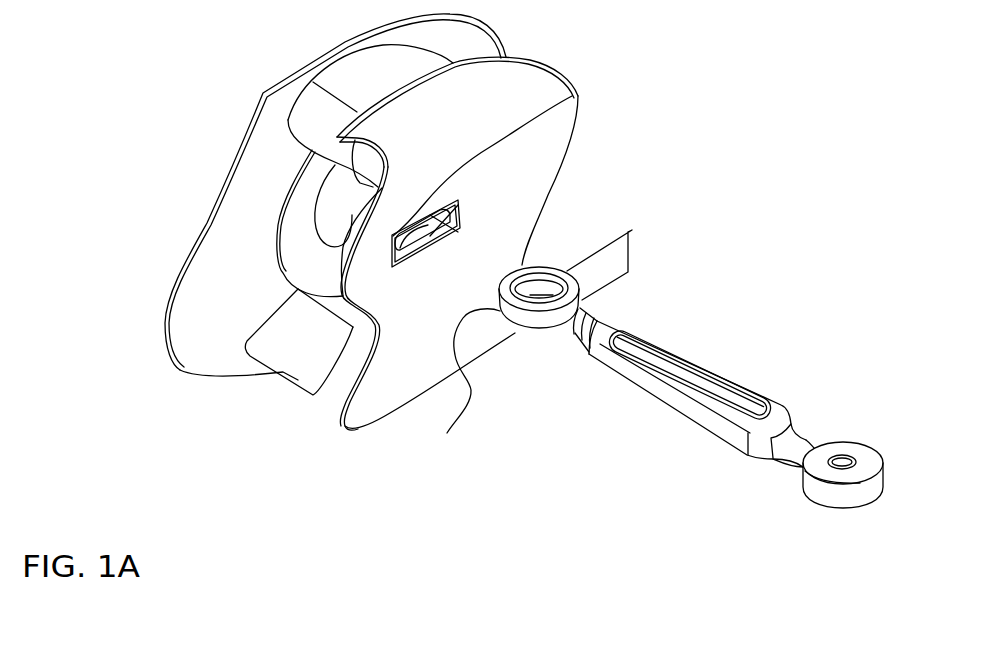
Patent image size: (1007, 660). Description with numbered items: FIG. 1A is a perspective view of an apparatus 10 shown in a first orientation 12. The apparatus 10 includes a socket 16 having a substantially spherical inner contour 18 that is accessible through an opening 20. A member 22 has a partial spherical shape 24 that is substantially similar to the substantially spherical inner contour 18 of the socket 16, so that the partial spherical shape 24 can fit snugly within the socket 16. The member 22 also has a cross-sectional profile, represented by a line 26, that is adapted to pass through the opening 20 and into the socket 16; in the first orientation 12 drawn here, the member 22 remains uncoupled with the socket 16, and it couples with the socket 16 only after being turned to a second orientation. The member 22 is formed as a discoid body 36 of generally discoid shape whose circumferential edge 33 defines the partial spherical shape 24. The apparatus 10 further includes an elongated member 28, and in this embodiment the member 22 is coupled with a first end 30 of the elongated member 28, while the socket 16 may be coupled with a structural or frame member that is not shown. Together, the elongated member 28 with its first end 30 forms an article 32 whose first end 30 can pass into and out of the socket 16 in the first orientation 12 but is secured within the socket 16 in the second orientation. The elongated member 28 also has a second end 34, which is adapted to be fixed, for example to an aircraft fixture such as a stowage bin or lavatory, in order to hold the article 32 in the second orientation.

The apparatus 10 is at (148, 55).
The first orientation 12 is at (617, 507).
The socket 16 is at (338, 218).
The substantially spherical inner contour 18 is at (455, 234).
The opening 20 is at (574, 95).
The member 22 is at (536, 328).
The partial spherical shape 24 is at (455, 381).
The line 26 is at (632, 250).
The elongated member 28 is at (710, 362).
The first end 30 is at (611, 304).
The article 32 is at (784, 369).
The circumferential edge 33 is at (522, 326).
The second end 34 is at (795, 512).
The discoid body 36 is at (835, 478).